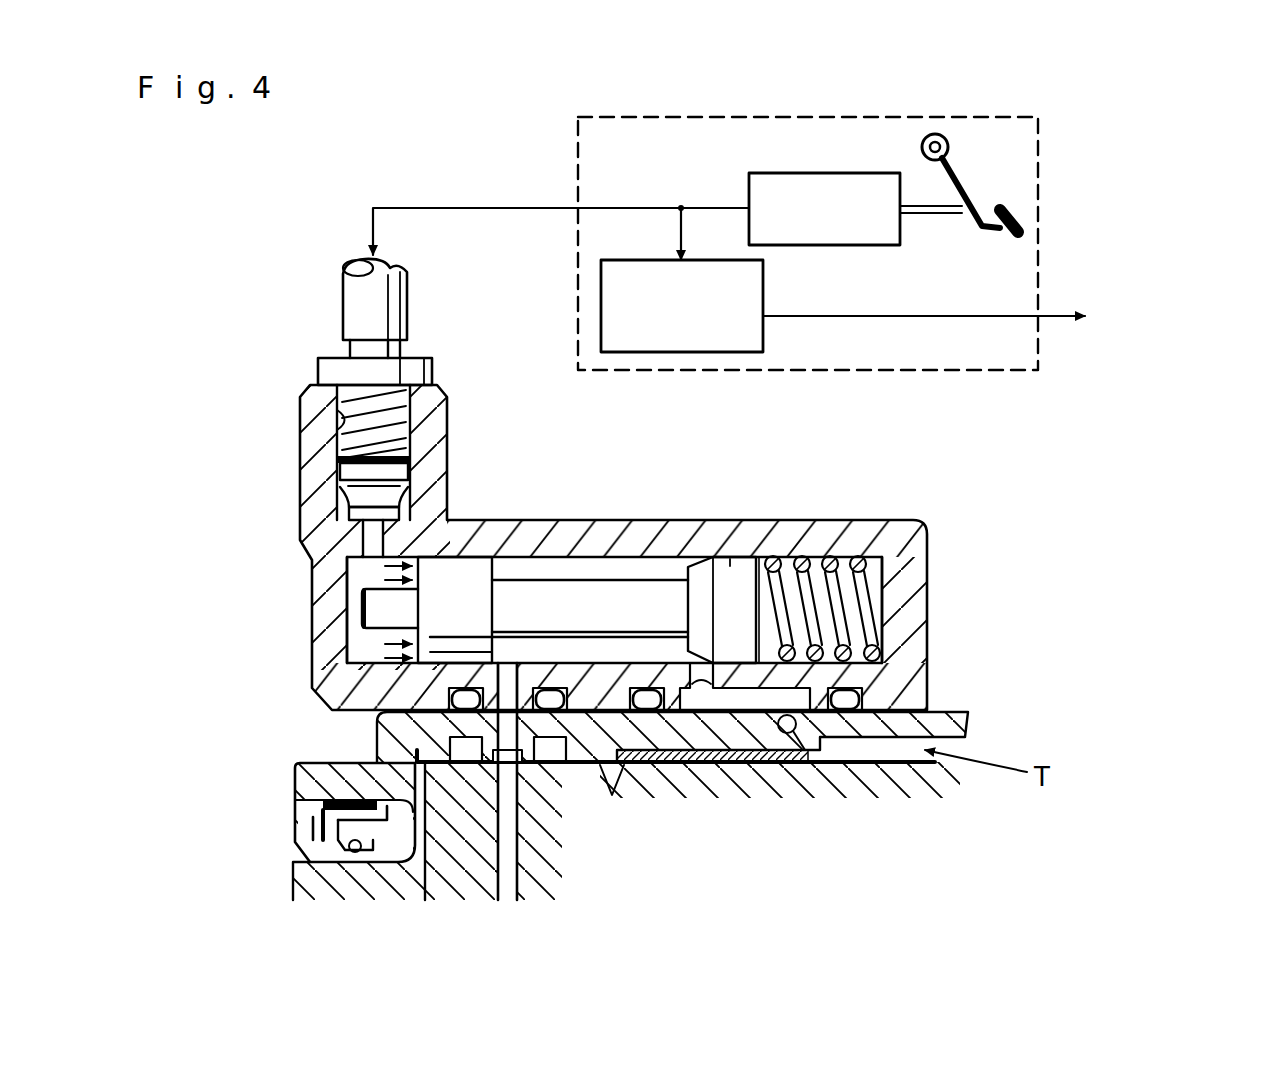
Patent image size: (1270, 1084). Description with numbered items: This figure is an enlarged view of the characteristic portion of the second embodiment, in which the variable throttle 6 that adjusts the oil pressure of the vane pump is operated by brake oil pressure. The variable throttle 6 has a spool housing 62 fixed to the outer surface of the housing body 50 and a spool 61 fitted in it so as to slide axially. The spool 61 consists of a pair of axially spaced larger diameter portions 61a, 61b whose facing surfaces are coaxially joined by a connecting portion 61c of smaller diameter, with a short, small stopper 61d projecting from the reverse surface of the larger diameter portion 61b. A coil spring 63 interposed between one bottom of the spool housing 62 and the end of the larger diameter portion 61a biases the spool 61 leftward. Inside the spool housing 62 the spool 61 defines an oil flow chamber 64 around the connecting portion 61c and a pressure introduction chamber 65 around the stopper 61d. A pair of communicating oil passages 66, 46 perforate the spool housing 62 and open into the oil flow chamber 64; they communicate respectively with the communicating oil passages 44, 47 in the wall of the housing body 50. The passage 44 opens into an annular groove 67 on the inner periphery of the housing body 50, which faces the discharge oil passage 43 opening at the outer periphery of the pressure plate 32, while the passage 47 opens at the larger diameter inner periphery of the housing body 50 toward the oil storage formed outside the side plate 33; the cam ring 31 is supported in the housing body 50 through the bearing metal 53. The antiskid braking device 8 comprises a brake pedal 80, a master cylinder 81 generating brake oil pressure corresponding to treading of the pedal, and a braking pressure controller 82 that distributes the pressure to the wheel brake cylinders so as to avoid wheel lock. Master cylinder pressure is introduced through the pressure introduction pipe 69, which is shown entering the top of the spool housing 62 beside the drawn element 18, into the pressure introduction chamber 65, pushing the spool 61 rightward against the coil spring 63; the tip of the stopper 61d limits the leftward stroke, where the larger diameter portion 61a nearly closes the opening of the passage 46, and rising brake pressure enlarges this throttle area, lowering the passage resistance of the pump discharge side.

The variable throttle 6 is at (895, 505).
The antiskid braking device 8 is at (805, 221).
The adjusting plug 18 is at (345, 434).
The cam ring 31 is at (738, 775).
The pressure plate 32 is at (298, 887).
The side plate 33 is at (878, 785).
The discharge oil passage 43 is at (495, 880).
The communicating oil passage 44 is at (503, 722).
The communicating oil passage 46 is at (692, 690).
The communicating oil passage 47 is at (783, 765).
The housing body 50 is at (948, 707).
The bearing metal 53 is at (645, 765).
The spool 61 is at (600, 541).
The larger diameter portion 61a is at (740, 565).
The larger diameter portion 61b is at (457, 557).
The connecting portion 61c is at (575, 592).
The stopper 61d is at (365, 612).
The spool housing 62 is at (805, 555).
The coil spring 63 is at (883, 603).
The oil flow chamber 64 is at (628, 555).
The pressure introduction chamber 65 is at (352, 650).
The communicating oil passage 66 is at (512, 686).
The annular groove 67 is at (527, 783).
The pressure introduction pipe 69 is at (343, 300).
The brake pedal 80 is at (1020, 222).
The master cylinder 81 is at (820, 173).
The braking pressure controller 82 is at (601, 316).